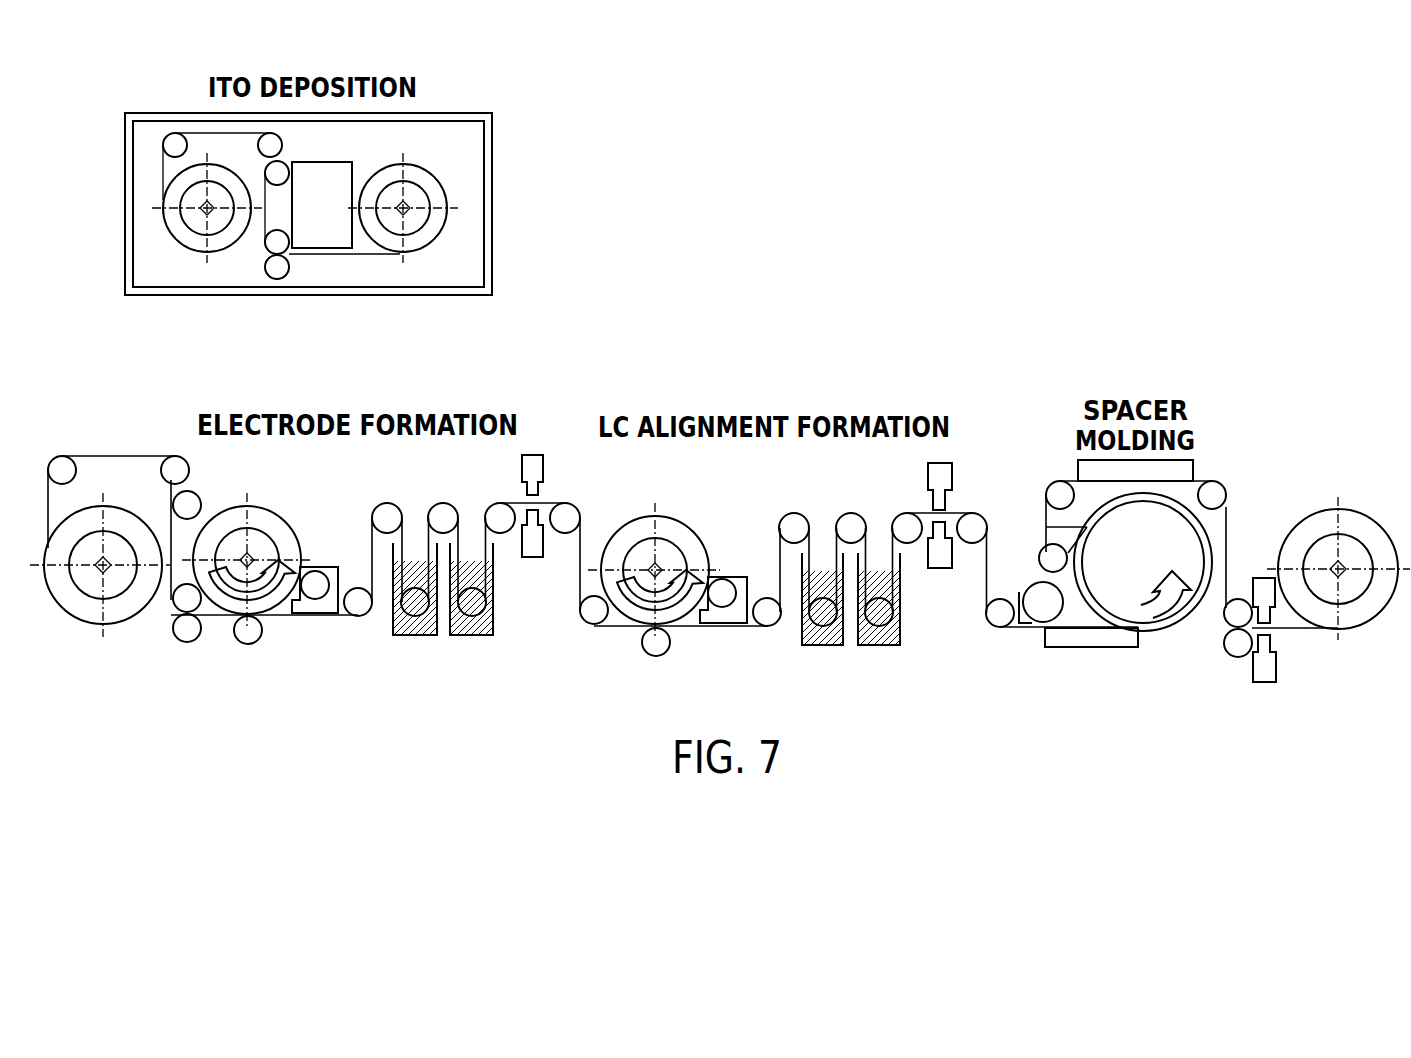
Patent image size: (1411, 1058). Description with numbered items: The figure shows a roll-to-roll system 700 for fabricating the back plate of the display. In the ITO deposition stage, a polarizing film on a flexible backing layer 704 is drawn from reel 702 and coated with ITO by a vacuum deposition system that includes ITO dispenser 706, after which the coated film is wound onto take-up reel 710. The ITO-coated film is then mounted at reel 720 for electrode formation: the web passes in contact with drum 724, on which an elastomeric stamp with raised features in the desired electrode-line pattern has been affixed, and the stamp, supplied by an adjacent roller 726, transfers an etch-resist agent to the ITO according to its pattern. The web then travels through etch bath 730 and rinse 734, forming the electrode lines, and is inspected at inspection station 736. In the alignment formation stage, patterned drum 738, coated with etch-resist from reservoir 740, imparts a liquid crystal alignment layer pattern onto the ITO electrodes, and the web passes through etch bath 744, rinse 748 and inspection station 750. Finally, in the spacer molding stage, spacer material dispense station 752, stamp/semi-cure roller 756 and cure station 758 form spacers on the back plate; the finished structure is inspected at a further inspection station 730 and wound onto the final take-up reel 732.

The roll-to-roll manufacturing system 700 is at (923, 112).
The reel 702 is at (170, 230).
The polarizing film on flexible backing layer 704 is at (163, 173).
The ITO dispenser 706 is at (352, 162).
The take-up reel 710 is at (441, 230).
The reel 720 is at (90, 625).
The drum 724 is at (286, 521).
The ink supply roller 726 is at (310, 615).
The etch bath / inspection station 730 is at (417, 566).
The rinse 734 is at (471, 566).
The inspection station 736 is at (544, 477).
The drum 738 is at (683, 522).
The reservoir 740 is at (733, 576).
The etch bath 744 is at (818, 572).
The rinse 748 is at (877, 572).
The inspection station 750 is at (952, 483).
The spacer material dispense station 752 is at (1050, 622).
The stamp/semi-cure roller 756 is at (1208, 547).
The cure station 758 is at (1193, 472).
The take-up reel 732 is at (1375, 618).